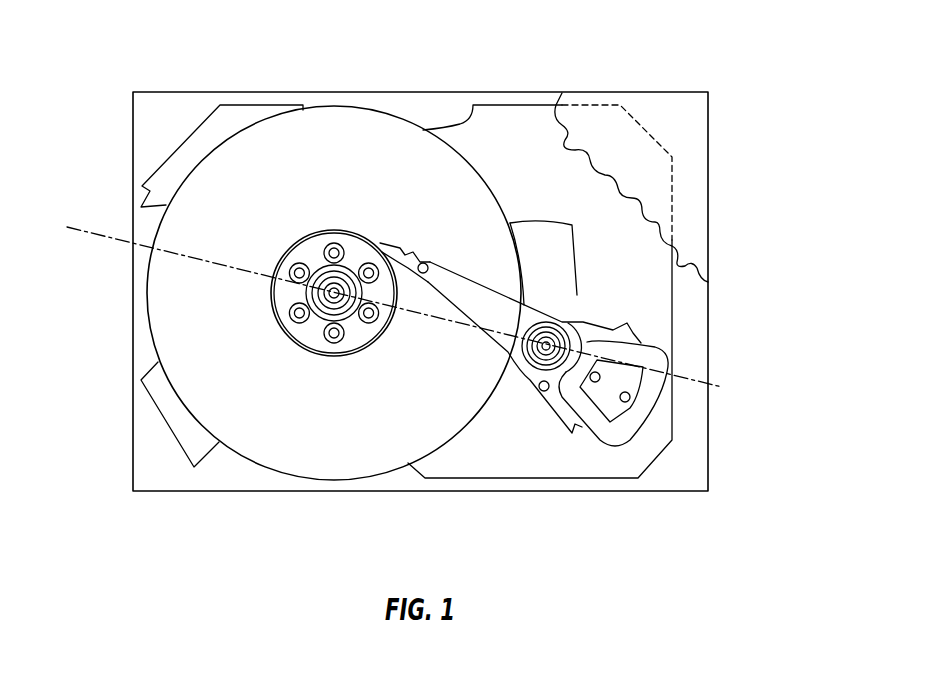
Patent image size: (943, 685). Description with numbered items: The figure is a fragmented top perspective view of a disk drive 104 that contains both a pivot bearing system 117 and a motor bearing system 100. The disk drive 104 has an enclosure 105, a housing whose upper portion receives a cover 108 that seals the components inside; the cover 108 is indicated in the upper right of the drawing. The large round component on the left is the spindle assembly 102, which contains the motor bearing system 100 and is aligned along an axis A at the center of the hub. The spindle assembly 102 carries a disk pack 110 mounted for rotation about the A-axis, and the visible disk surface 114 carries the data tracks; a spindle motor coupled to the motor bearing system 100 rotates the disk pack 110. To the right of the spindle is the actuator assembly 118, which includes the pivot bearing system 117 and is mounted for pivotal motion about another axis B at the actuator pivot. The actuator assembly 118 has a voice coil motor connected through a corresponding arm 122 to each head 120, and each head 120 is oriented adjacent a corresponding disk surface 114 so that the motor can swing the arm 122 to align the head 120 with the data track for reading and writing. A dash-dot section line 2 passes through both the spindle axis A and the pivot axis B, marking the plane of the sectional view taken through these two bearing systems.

The motor bearing system 100 is at (266, 322).
The spindle assembly 102 is at (178, 404).
The disk drive 104 is at (583, 62).
The enclosure 105 is at (670, 92).
The cover 108 is at (658, 183).
The disk pack 110 is at (276, 112).
The disk surface 114 is at (333, 160).
The pivot bearing system 117 is at (565, 323).
The actuator assembly 118 is at (552, 412).
The head 120 is at (380, 243).
The arm 122 is at (480, 302).
The section line 2- 2 is at (67, 227).
The axis A is at (334, 293).
The axis B is at (546, 346).